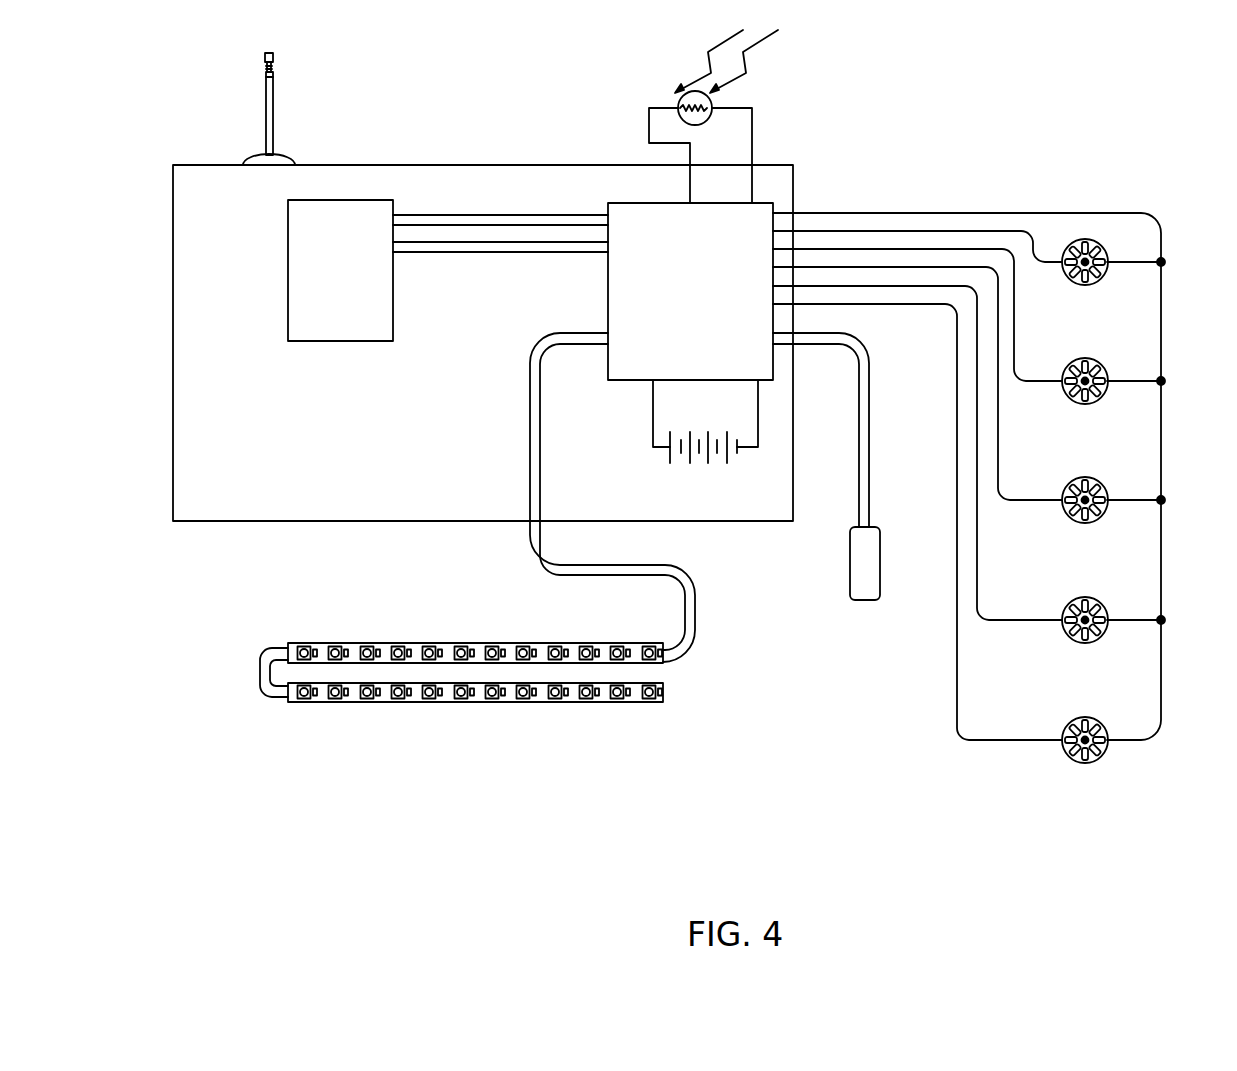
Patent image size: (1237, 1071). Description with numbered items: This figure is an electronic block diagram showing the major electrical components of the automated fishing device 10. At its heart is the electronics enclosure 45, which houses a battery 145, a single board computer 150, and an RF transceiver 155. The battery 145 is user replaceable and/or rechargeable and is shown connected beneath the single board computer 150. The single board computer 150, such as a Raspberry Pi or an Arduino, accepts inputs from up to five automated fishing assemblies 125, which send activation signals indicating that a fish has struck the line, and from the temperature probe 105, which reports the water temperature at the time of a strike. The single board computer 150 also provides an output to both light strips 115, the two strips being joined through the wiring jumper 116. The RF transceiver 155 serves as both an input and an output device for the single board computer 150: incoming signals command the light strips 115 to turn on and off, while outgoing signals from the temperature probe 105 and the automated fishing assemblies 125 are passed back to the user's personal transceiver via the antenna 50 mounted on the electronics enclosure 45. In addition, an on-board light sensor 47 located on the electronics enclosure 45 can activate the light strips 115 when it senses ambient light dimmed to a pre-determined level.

The automated fishing device 10 is at (403, 778).
The electronics enclosure 45 is at (245, 521).
The light sensor 47 is at (700, 117).
The antenna 50 is at (268, 140).
The temperature probe 105 is at (870, 585).
The light strips 115 is at (663, 660).
The wiring jumper 116 is at (267, 672).
The automated fishing assemblies 125 is at (1102, 252).
The battery 145 is at (718, 458).
The single board computer 150 is at (757, 237).
The RF transceiver 155 is at (343, 247).